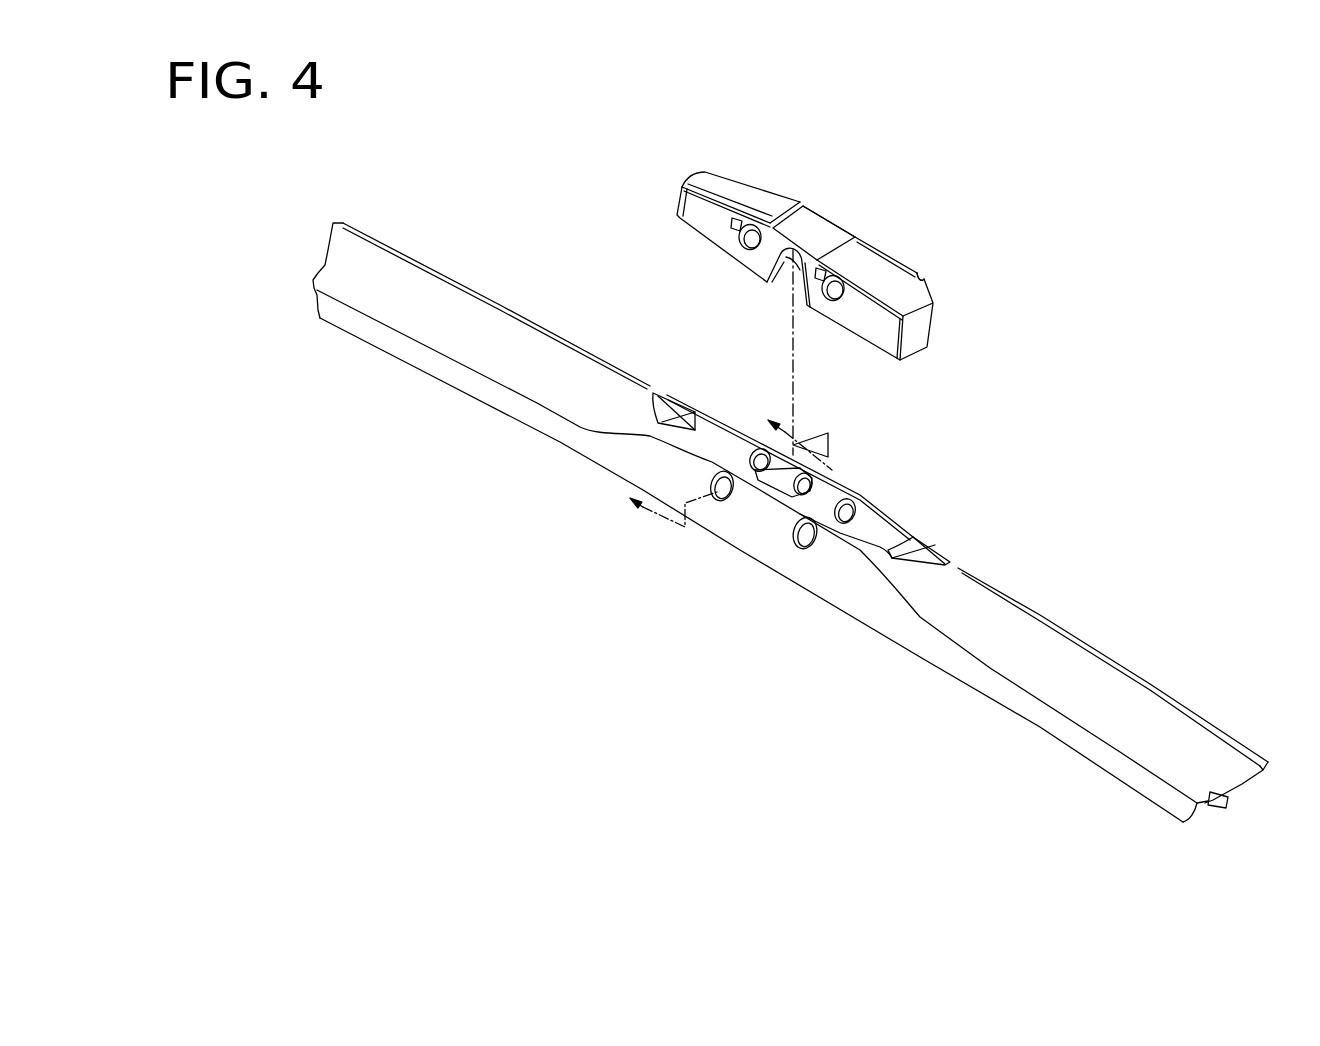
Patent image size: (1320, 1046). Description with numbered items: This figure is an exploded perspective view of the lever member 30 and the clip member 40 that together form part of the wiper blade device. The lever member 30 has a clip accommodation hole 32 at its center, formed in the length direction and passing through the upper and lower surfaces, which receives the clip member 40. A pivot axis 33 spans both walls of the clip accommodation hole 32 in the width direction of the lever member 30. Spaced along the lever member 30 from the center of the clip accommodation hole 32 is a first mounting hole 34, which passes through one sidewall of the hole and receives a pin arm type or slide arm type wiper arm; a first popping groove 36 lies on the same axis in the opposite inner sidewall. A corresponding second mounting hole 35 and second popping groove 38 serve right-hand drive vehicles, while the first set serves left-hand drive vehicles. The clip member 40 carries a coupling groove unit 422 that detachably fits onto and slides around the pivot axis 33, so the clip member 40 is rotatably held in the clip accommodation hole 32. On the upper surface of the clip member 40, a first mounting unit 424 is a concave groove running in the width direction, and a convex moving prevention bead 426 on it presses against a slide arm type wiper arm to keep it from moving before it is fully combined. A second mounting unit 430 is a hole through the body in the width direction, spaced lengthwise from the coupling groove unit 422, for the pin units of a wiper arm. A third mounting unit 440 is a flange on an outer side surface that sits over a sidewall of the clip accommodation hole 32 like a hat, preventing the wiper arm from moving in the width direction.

The lever member 30 is at (899, 656).
The clip accommodation hole 32 is at (912, 527).
The pivot axis 33 is at (806, 483).
The first mounting hole 34 is at (717, 496).
The second mounting hole 35 is at (803, 550).
The first popping groove 36 is at (758, 450).
The second popping groove 38 is at (853, 511).
The clip member 40 is at (916, 250).
The coupling groove unit 422 is at (795, 272).
The first mounting unit 424 is at (797, 231).
The moving prevention bead 426 is at (836, 231).
The second mounting unit 430 is at (740, 237).
The third mounting unit 440 is at (924, 278).